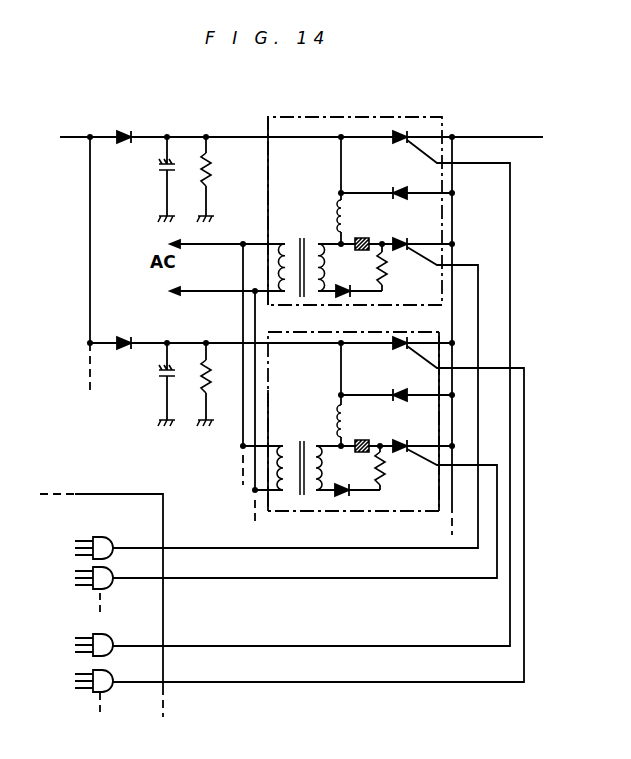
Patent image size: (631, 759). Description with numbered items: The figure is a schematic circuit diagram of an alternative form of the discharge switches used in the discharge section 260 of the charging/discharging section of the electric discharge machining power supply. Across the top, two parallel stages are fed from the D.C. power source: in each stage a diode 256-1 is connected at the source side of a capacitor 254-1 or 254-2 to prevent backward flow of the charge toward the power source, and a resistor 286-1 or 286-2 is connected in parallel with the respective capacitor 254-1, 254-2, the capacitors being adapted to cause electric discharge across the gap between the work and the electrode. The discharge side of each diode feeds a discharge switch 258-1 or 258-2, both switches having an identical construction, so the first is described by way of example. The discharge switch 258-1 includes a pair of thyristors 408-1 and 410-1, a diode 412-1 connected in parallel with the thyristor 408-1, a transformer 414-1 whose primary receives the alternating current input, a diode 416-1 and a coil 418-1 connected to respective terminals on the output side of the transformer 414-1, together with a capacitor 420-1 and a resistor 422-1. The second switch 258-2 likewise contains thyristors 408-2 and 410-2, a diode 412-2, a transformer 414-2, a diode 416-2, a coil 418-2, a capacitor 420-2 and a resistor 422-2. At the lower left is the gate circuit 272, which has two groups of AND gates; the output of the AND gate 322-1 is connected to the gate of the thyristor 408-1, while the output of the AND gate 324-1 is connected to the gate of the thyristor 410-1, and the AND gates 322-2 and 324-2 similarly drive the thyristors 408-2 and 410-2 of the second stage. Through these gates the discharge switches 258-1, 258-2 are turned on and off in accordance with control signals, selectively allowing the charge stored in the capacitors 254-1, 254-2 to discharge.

The discharge section 260 is at (455, 116).
The diode 256-1 is at (127, 128).
The capacitor 254-1 is at (158, 168).
The capacitor 254-2 is at (158, 374).
The resistor 286-1 is at (212, 172).
The resistor 286-2 is at (213, 380).
The discharge switch 258-1 is at (298, 115).
The discharge switch 258-2 is at (440, 336).
The thyristor 408-1 is at (398, 128).
The thyristor 408-2 is at (405, 326).
The diode 412-1 is at (390, 190).
The diode 412-2 is at (390, 392).
The coil 418-1 is at (338, 205).
The coil 418-2 is at (338, 412).
The transformer 414-1 is at (302, 238).
The transformer 414-2 is at (300, 496).
The capacitor 420-1 is at (366, 238).
The capacitor 420-2 is at (366, 440).
The thyristor 410-1 is at (406, 240).
The thyristor 410-2 is at (406, 442).
The resistor 422-1 is at (386, 250).
The resistor 422-2 is at (384, 470).
The diode 416-1 is at (340, 295).
The diode 416-2 is at (344, 496).
The gate circuit 272 is at (90, 493).
The AND gate 324-1 is at (108, 537).
The AND gate 324-2 is at (113, 585).
The AND gate 322-1 is at (110, 637).
The AND gate 322-2 is at (108, 690).